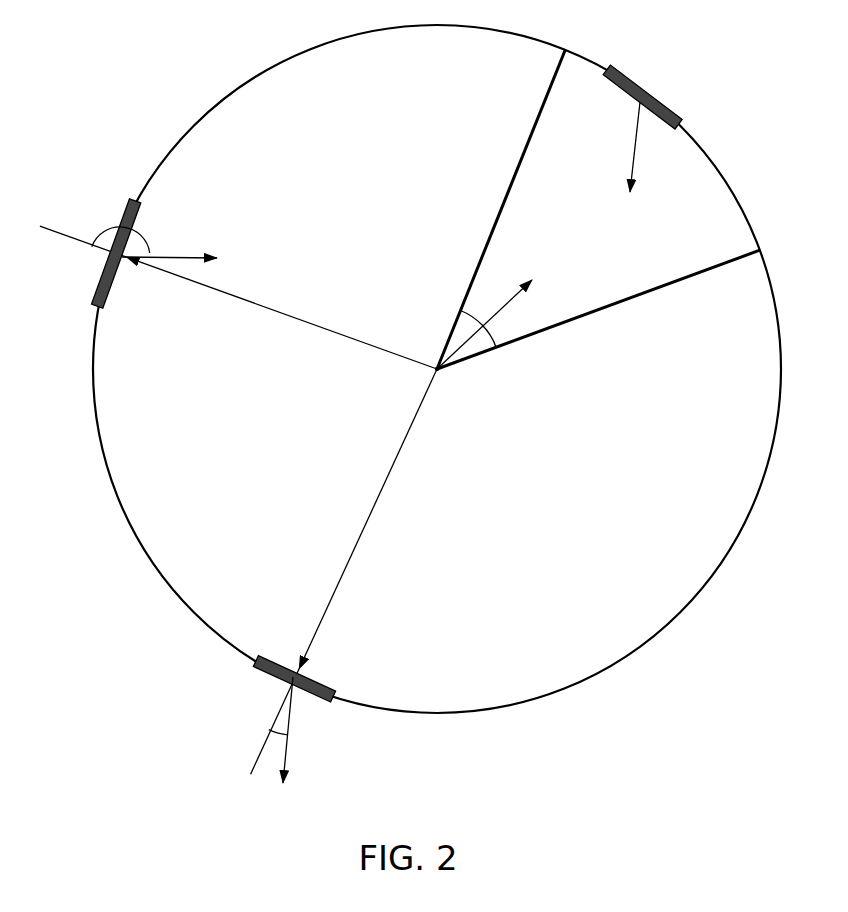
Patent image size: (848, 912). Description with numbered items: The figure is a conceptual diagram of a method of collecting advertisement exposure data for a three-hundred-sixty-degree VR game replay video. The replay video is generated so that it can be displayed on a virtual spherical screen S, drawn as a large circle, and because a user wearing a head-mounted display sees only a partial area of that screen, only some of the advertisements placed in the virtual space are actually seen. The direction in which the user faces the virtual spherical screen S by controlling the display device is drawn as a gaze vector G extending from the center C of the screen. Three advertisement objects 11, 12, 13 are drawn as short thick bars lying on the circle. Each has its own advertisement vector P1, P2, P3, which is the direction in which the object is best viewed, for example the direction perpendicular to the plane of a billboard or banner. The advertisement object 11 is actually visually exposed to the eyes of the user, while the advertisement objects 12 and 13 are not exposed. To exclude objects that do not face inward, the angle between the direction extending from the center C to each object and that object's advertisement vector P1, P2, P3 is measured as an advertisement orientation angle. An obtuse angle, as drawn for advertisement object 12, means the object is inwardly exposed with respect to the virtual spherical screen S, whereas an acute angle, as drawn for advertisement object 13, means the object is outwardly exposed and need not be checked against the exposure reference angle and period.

The advertisement object 11 is at (667, 103).
The advertisement object 12 is at (97, 277).
The advertisement object 13 is at (263, 678).
The virtual spherical screen S is at (718, 570).
The center of the virtual spherical screen C is at (437, 371).
The gaze vector G is at (486, 309).
The advertisement vector P1 is at (625, 165).
The advertisement vector P2 is at (174, 240).
The advertisement vector P3 is at (302, 730).